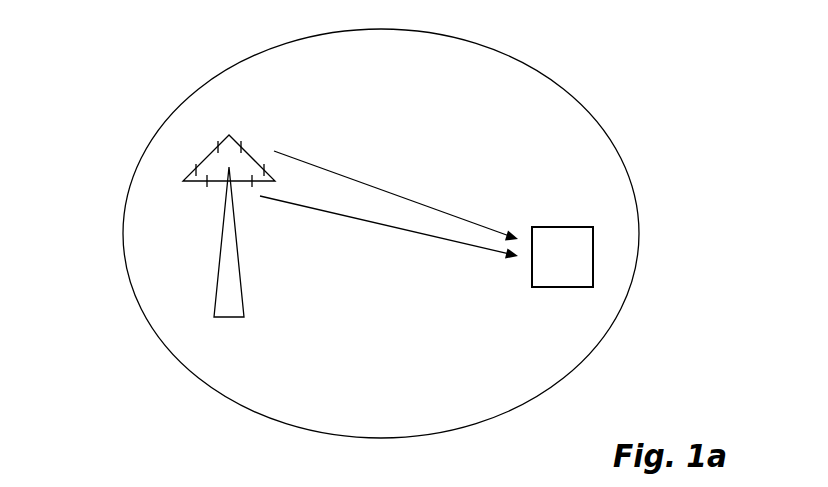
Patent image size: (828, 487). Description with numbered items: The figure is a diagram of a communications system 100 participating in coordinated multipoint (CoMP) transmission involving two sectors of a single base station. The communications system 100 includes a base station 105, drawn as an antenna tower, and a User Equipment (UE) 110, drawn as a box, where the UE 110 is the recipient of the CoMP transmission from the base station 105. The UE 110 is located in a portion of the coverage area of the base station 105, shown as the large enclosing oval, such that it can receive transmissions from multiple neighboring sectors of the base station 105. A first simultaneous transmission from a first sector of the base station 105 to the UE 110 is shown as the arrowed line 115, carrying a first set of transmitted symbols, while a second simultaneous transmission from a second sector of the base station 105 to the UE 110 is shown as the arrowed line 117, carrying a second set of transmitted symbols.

The communications system 100 is at (105, 43).
The base station 105 is at (216, 286).
The User Equipment (UE) 110 is at (563, 227).
The arrowed line 115 is at (442, 239).
The arrowed line 117 is at (440, 211).